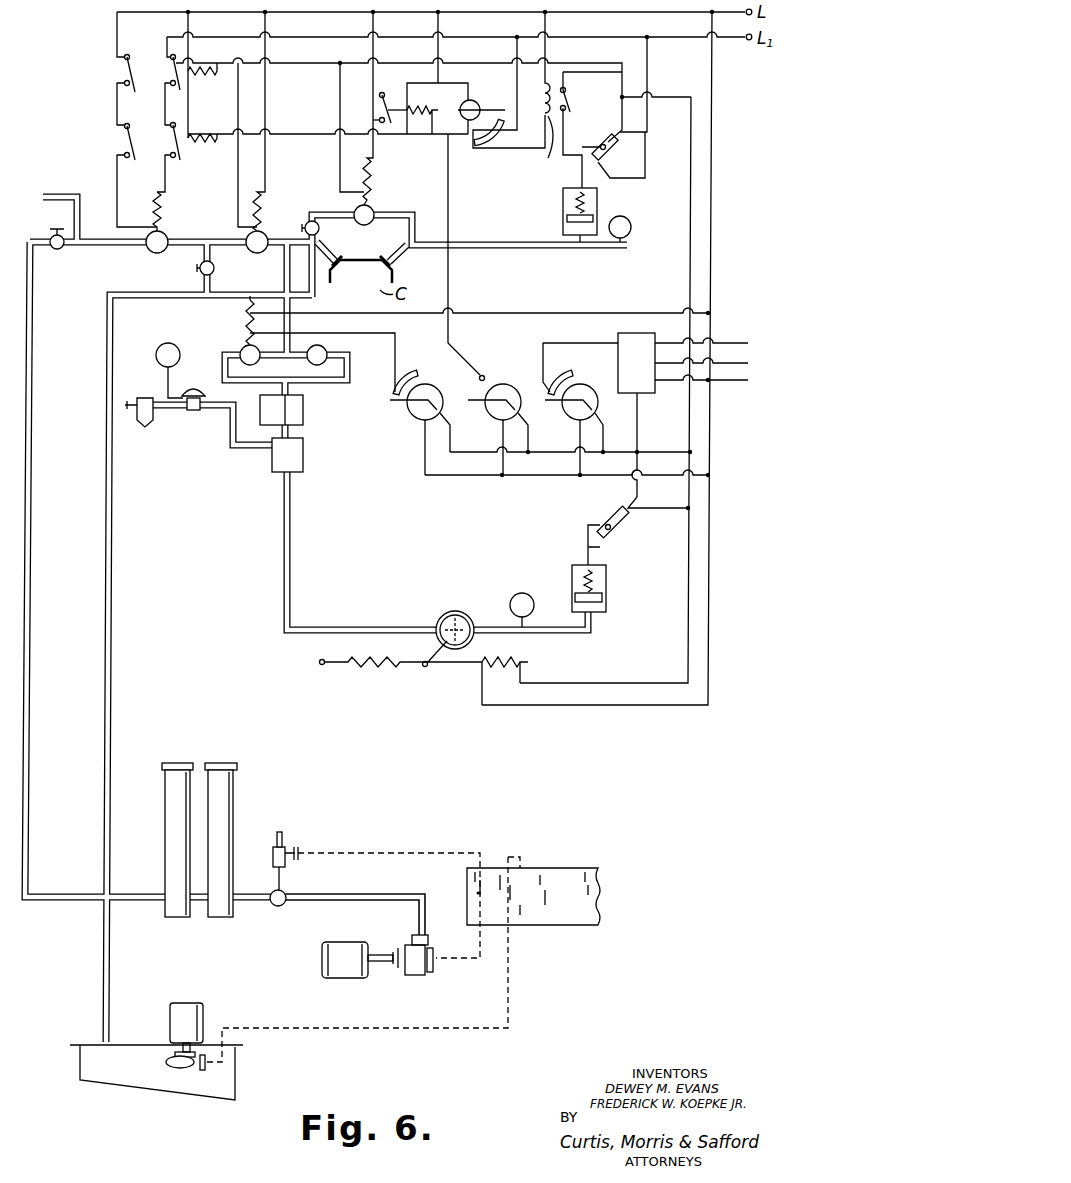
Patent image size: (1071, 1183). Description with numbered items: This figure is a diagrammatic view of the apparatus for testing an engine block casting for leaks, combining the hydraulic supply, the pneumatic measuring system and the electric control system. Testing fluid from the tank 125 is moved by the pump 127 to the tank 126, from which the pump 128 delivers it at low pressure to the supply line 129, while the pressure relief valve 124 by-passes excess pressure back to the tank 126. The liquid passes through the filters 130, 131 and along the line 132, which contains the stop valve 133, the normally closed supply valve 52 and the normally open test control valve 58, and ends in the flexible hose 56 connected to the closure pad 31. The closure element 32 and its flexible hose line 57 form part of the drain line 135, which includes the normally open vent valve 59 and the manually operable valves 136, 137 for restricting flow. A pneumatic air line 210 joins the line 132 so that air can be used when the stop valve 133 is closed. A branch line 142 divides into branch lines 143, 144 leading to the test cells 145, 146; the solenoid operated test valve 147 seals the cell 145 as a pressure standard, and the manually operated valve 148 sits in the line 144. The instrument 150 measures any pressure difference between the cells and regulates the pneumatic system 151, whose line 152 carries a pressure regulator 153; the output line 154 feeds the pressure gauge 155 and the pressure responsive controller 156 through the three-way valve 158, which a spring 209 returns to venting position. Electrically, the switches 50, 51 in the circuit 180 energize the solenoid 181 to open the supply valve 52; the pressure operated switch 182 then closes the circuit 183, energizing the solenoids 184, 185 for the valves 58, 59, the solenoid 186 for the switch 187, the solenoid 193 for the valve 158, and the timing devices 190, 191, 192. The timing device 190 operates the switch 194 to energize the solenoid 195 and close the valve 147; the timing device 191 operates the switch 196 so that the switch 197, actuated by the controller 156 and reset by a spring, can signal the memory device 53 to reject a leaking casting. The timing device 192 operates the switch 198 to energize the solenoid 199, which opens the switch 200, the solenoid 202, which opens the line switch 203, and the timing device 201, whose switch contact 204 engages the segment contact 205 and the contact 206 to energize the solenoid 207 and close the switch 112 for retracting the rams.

The closure pad 31 is at (341, 258).
The closure element 32 is at (386, 256).
The switch 50 is at (124, 64).
The switch 51 is at (124, 133).
The supply valve 52 is at (147, 249).
The memory device 53 is at (642, 368).
The flexible hose 56 is at (336, 256).
The flexible hose line 57 is at (399, 262).
The test control valve 58 is at (266, 236).
The vent valve 59 is at (374, 210).
The switch 112 is at (568, 105).
The pressure relief valve 124 is at (283, 833).
The tank 125 is at (241, 1075).
The tank 126 is at (553, 866).
The pump 127 is at (179, 1002).
The pump 128 is at (340, 943).
The supply line 129 is at (355, 895).
The filter 130 is at (175, 765).
The filter 131 is at (219, 765).
The line 132 is at (31, 620).
The stop valve 133 is at (58, 250).
The drain line 135 is at (322, 210).
The manually operable valve 136 is at (305, 224).
The manually operable valve 137 is at (197, 272).
The branch line 142 is at (285, 272).
The branch line 143 is at (232, 355).
The branch line 144 is at (347, 376).
The test cell 145 is at (262, 403).
The test cell 146 is at (305, 410).
The test valve 147 is at (282, 362).
The manually operated valve 148 is at (328, 352).
The instrument 150 is at (305, 450).
The pneumatic system 151 is at (253, 459).
The line 152 is at (214, 410).
The pressure regulator 153 is at (195, 390).
The line 154 is at (290, 562).
The pressure gauge 155 is at (523, 592).
The pressure responsive controller 156 is at (610, 605).
The three-way valve 158 is at (456, 611).
The circuit 180 is at (116, 36).
The solenoid 181 is at (165, 205).
The pressure operated switch 182 is at (614, 152).
The circuit 183 is at (603, 76).
The solenoid 184 is at (262, 200).
The solenoid 185 is at (374, 185).
The solenoid 186 is at (196, 78).
The switch 187 is at (172, 70).
The timing device 190 is at (415, 420).
The timing device 191 is at (584, 385).
The timing device 192 is at (509, 385).
The solenoid 193 is at (522, 660).
The switch 194 is at (409, 368).
The solenoid 195 is at (245, 320).
The switch 196 is at (551, 420).
The switch 197 is at (620, 528).
The switch 198 is at (484, 372).
The solenoid 199 is at (407, 116).
The switch 200 is at (379, 101).
The timing device 201 is at (472, 100).
The solenoid 202 is at (193, 146).
The line switch 203 is at (170, 145).
The switch contact 204 is at (480, 110).
The segment contact 205 is at (490, 143).
The contact 206 is at (468, 131).
The solenoid 207 is at (548, 158).
The spring 209 is at (374, 668).
The pneumatic air line 210 is at (52, 197).